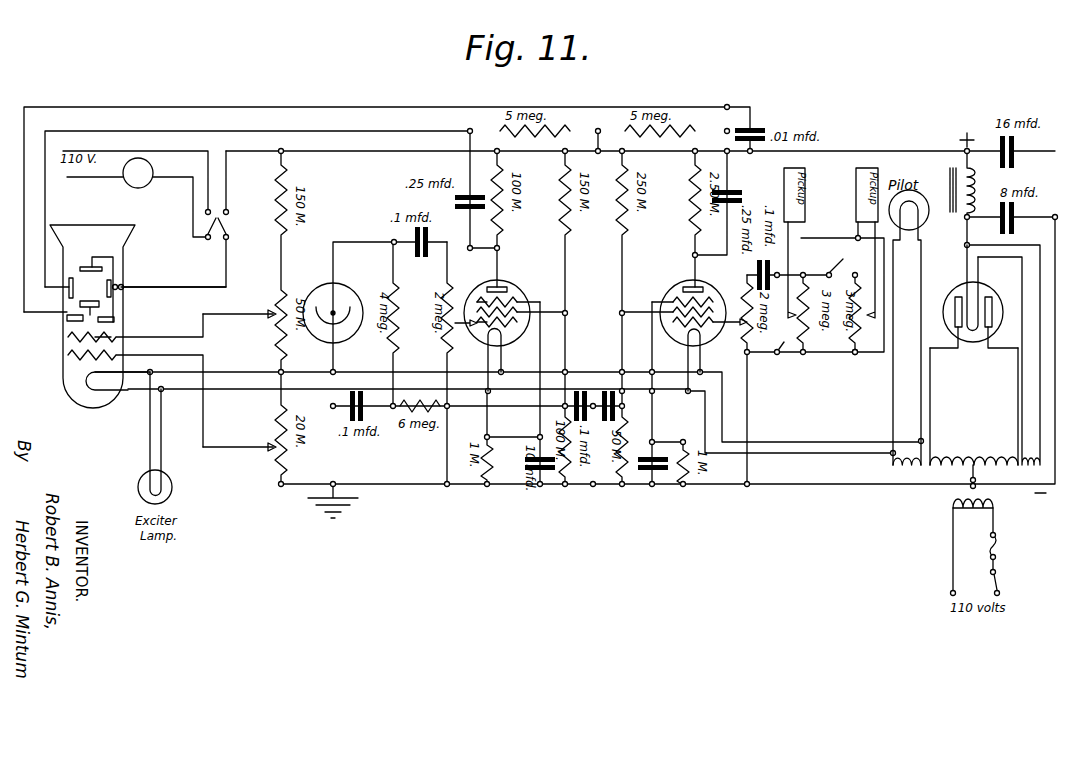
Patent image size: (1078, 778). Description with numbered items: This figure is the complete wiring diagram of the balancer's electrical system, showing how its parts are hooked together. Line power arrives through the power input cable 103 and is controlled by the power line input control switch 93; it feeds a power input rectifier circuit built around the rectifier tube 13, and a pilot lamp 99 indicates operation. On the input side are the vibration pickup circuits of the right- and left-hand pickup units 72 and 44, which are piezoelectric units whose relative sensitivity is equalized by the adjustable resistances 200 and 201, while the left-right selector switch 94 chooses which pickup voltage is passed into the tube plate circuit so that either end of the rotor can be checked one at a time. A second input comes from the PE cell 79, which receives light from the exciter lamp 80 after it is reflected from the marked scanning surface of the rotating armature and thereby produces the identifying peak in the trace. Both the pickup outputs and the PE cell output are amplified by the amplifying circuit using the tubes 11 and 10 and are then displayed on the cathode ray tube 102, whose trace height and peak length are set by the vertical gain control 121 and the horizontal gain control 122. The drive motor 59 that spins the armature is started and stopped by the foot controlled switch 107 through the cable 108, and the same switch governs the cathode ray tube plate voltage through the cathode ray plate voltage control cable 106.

The drive motor 59 is at (141, 186).
The cable 108 is at (207, 198).
The foot controlled switch 107 is at (224, 228).
The cathode ray tube 102 is at (124, 257).
The cathode ray plate voltage control cable 106 is at (190, 291).
The vertical gain control 121 is at (239, 322).
The horizontal gain control 122 is at (239, 454).
The exciter lamp 80 is at (140, 486).
The PE cell 79 is at (344, 296).
The amplifying tube 10 is at (516, 297).
The amplifying tube 11 is at (683, 290).
The right-hand pickup unit 72 is at (784, 178).
The left-hand pickup unit 44 is at (856, 178).
The left-right selector switch 94 is at (846, 266).
The adjustable resistance 201 is at (792, 338).
The adjustable resistance 200 is at (872, 338).
The pilot lamp 99 is at (922, 217).
The rectifier tube 13 is at (972, 339).
The power line input control switch 93 is at (1005, 580).
The power input cable 103 is at (971, 619).